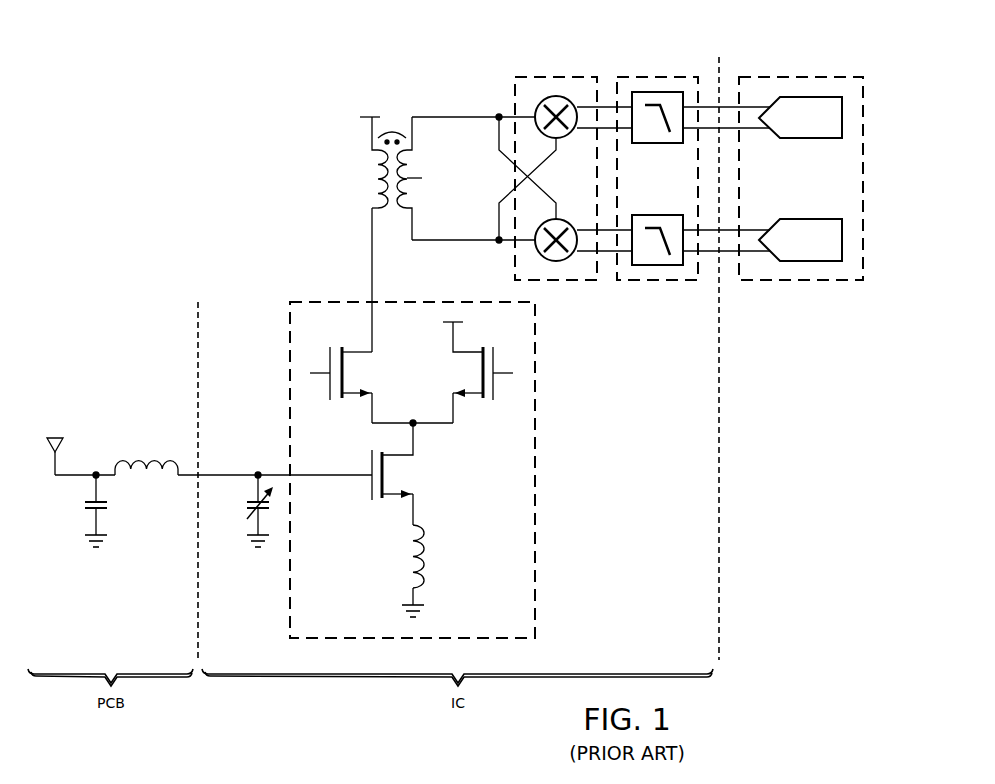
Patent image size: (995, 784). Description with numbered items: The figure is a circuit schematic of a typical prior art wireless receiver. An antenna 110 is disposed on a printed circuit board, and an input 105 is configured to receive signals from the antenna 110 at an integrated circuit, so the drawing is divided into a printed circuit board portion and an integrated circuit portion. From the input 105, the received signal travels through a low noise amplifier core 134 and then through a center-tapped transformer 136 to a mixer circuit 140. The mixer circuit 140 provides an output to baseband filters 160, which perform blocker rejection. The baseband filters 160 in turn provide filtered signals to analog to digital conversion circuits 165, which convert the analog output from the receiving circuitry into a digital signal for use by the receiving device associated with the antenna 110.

The antenna 110 is at (52, 437).
The input 105 is at (238, 470).
The low noise amplifier core 134 is at (338, 292).
The center-tapped transformer 136 is at (377, 210).
The mixer circuit 140 is at (568, 70).
The baseband filters 160 is at (670, 70).
The analog to digital conversion circuits 165 is at (813, 70).